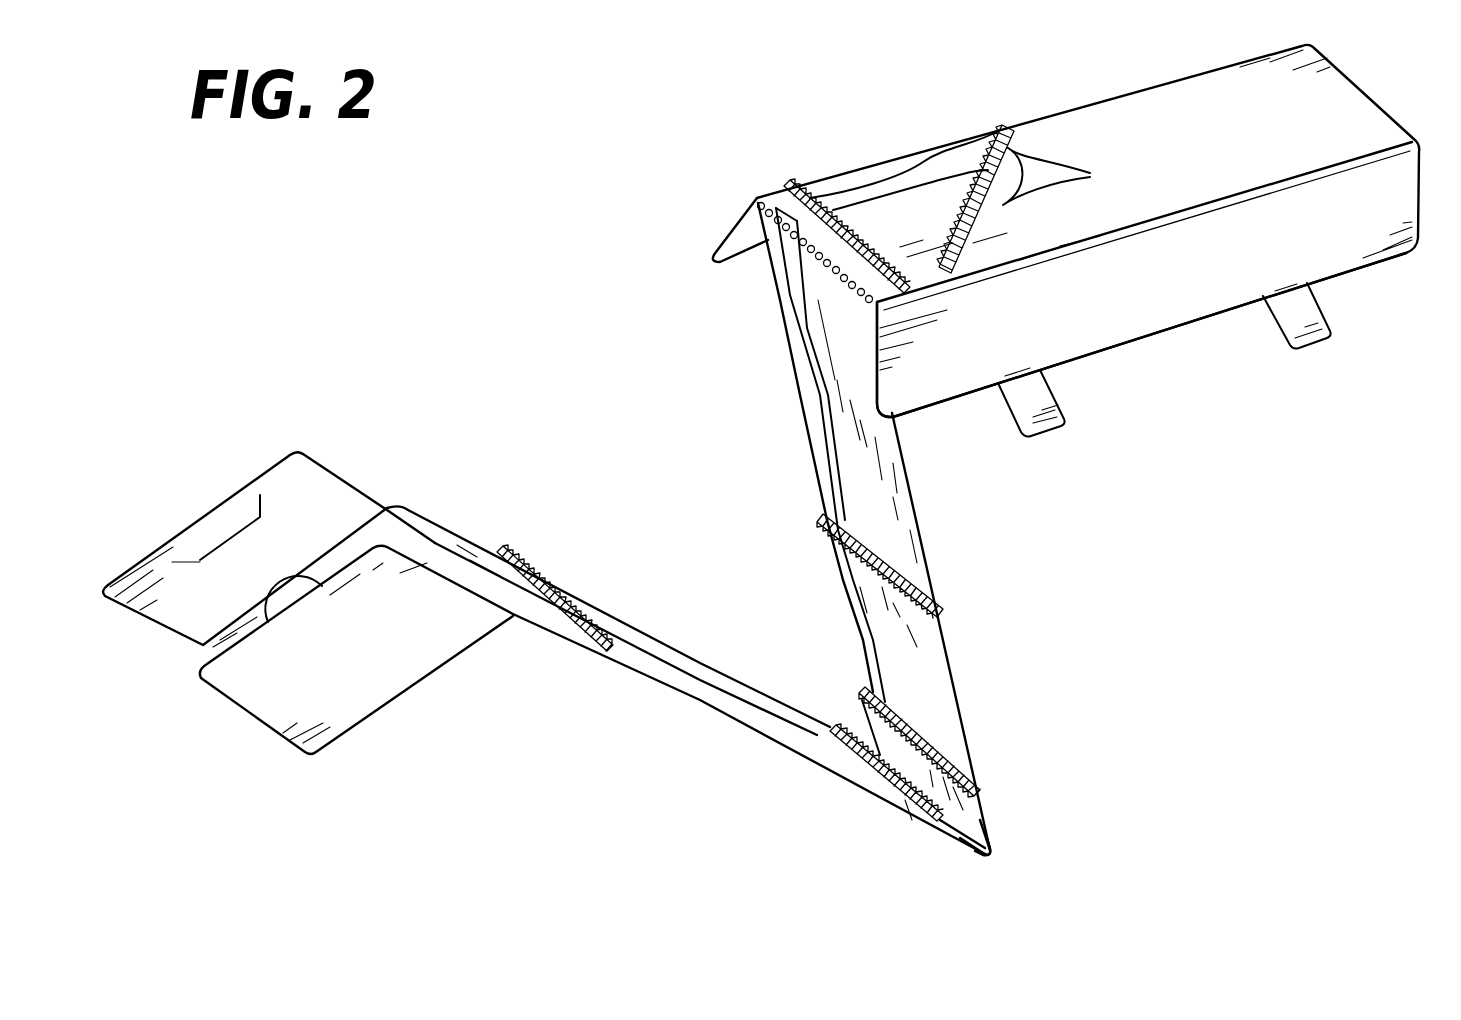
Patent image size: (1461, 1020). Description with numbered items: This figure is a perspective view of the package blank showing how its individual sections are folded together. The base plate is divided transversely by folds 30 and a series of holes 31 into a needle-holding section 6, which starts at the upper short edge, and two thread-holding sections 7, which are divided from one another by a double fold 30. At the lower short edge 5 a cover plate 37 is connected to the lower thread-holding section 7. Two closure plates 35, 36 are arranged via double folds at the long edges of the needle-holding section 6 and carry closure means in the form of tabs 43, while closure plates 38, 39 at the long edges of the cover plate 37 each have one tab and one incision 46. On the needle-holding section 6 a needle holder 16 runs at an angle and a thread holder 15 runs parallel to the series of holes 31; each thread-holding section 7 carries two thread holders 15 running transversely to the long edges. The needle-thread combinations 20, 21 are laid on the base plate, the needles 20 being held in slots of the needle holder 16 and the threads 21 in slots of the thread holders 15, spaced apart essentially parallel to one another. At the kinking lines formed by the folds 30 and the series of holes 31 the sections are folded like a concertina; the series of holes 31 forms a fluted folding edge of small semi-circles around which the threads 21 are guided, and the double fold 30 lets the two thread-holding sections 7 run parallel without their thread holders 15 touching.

The lower short edge 5 is at (592, 608).
The needle-holding section 6 is at (1109, 227).
The thread-holding section 7 is at (839, 529).
The thread holder 15 is at (788, 185).
The needle holder 16 is at (995, 135).
The needle 20 is at (1066, 176).
The thread 21 is at (822, 360).
The fold 30 is at (982, 820).
The series of holes 31 is at (872, 298).
The closure plate 35 is at (735, 244).
The closure plate 36 is at (1258, 250).
The cover plate 37 is at (203, 652).
The closure plate 38 is at (269, 503).
The closure plate 39 is at (348, 652).
The tab 43 is at (1322, 323).
The incision 46 is at (236, 532).